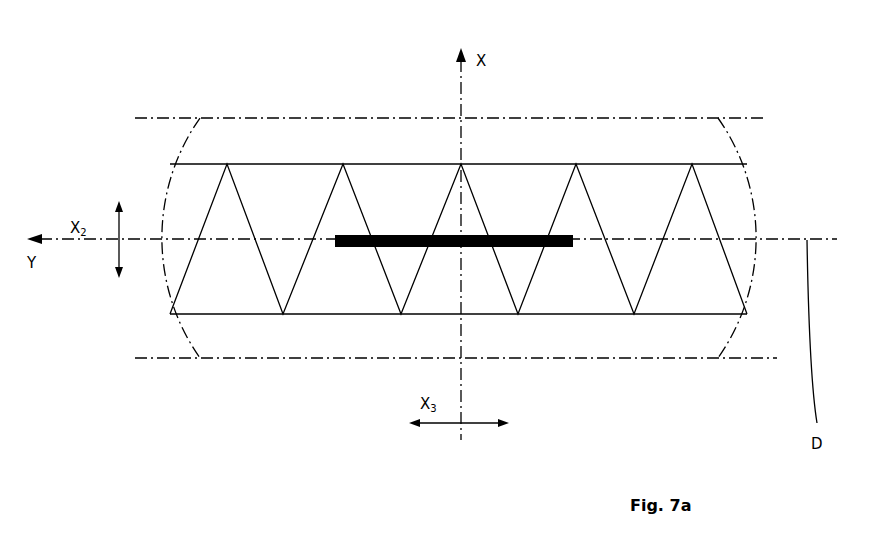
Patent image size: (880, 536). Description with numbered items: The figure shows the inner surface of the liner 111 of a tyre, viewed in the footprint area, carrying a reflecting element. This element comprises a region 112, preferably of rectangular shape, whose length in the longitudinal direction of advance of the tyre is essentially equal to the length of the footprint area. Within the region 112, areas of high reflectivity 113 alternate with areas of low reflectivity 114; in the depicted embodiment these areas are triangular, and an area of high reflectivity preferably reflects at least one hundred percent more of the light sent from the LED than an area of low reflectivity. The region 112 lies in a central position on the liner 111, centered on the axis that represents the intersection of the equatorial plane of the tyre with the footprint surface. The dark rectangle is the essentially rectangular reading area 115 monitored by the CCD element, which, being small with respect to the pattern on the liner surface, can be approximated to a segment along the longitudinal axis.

The liner 111 is at (647, 153).
The region 112 is at (268, 164).
The areas of high reflectivity 113 is at (279, 253).
The areas of low reflectivity 114 is at (213, 296).
The reading area 115 is at (536, 233).